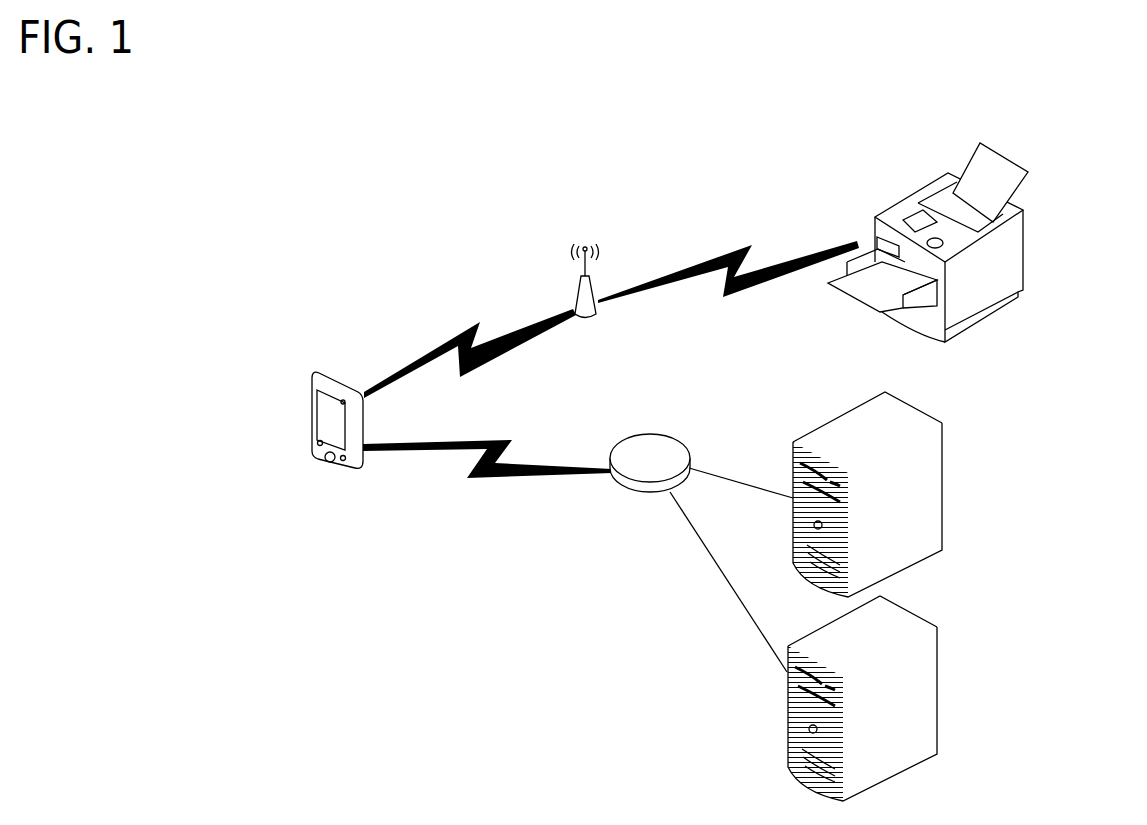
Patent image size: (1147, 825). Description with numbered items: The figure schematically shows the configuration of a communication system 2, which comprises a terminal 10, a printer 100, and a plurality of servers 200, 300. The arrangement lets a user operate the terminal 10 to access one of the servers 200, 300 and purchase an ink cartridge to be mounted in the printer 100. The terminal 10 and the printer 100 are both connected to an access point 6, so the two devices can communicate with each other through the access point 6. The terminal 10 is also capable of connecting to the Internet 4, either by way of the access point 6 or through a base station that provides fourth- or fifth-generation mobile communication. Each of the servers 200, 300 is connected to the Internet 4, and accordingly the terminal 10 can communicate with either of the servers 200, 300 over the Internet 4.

The communication system 2 is at (468, 181).
The Internet 4 is at (657, 431).
The access point 6 is at (593, 290).
The terminal 10 is at (323, 371).
The printer 100 is at (1025, 232).
The server 200 is at (944, 440).
The server 300 is at (940, 645).